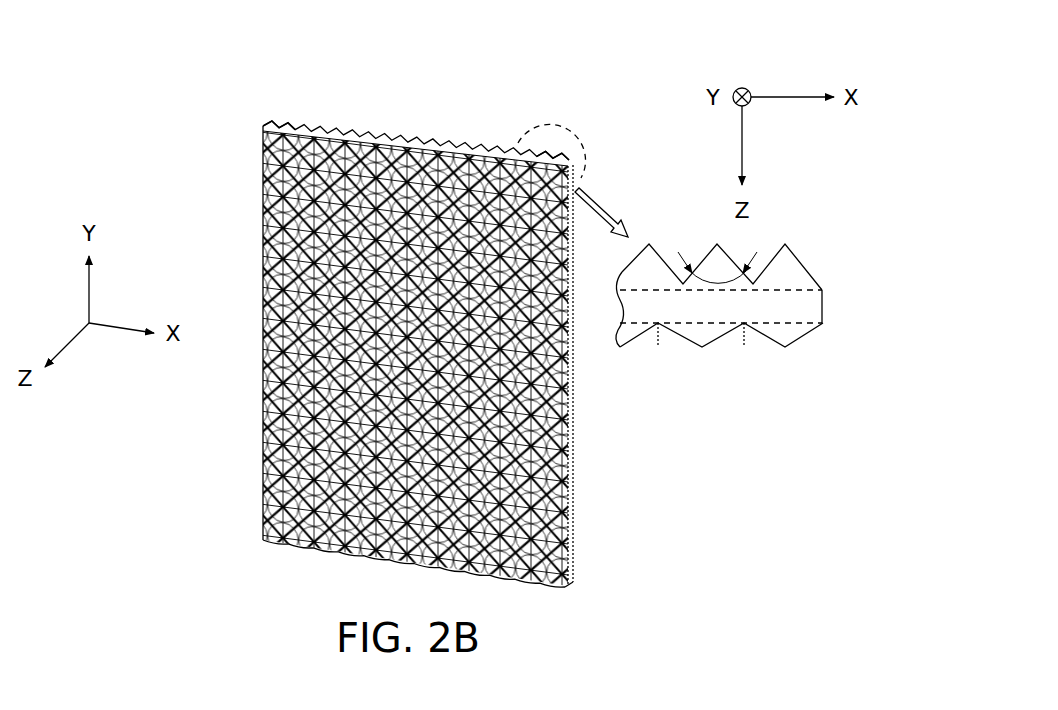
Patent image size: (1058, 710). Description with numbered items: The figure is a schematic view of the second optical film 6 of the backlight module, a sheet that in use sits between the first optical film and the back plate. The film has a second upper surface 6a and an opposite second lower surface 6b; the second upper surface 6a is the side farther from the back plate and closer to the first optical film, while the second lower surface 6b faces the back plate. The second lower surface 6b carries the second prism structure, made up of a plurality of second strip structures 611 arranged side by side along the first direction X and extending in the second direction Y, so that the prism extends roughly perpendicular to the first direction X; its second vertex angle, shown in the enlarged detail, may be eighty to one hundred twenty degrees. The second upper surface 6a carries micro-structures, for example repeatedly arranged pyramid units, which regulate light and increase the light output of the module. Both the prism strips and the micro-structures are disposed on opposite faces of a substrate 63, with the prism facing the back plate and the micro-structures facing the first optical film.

The second optical film 6 is at (57, 97).
The second strip structures 611 is at (280, 120).
The substrate 63 is at (823, 308).
The second upper surface 6a is at (563, 590).
The second lower surface 6b is at (574, 565).